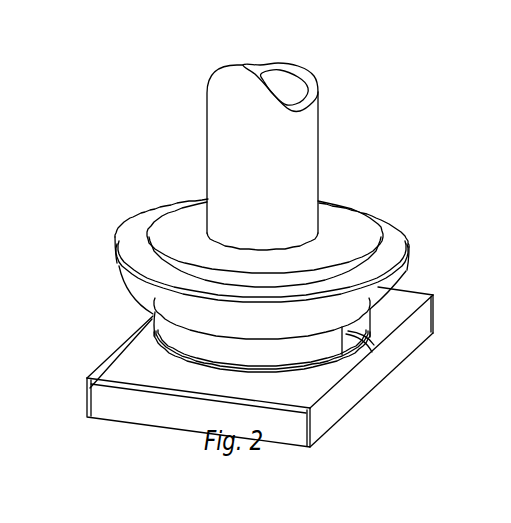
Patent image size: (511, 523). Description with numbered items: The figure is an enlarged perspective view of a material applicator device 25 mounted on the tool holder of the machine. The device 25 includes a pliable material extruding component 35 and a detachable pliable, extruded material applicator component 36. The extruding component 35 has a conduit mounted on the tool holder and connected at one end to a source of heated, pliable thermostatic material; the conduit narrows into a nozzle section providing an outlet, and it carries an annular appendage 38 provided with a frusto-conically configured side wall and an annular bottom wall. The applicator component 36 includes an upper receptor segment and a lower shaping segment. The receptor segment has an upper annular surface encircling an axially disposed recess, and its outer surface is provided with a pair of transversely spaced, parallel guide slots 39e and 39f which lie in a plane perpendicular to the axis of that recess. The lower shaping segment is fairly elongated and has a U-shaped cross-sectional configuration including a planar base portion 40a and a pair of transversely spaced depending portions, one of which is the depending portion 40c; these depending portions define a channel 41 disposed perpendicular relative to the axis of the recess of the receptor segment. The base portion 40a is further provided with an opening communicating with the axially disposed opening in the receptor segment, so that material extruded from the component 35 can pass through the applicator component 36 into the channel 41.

The material applicator device 25 is at (193, 185).
The pliable material extruding component 35 is at (318, 158).
The annular appendage 38 is at (368, 225).
The pliable, extruded material applicator component 36 is at (400, 253).
The guide slot 39e is at (150, 314).
The guide slot 39f is at (357, 332).
The planar base portion 40a is at (114, 358).
The depending portion 40c is at (360, 390).
The channel 41 is at (98, 402).